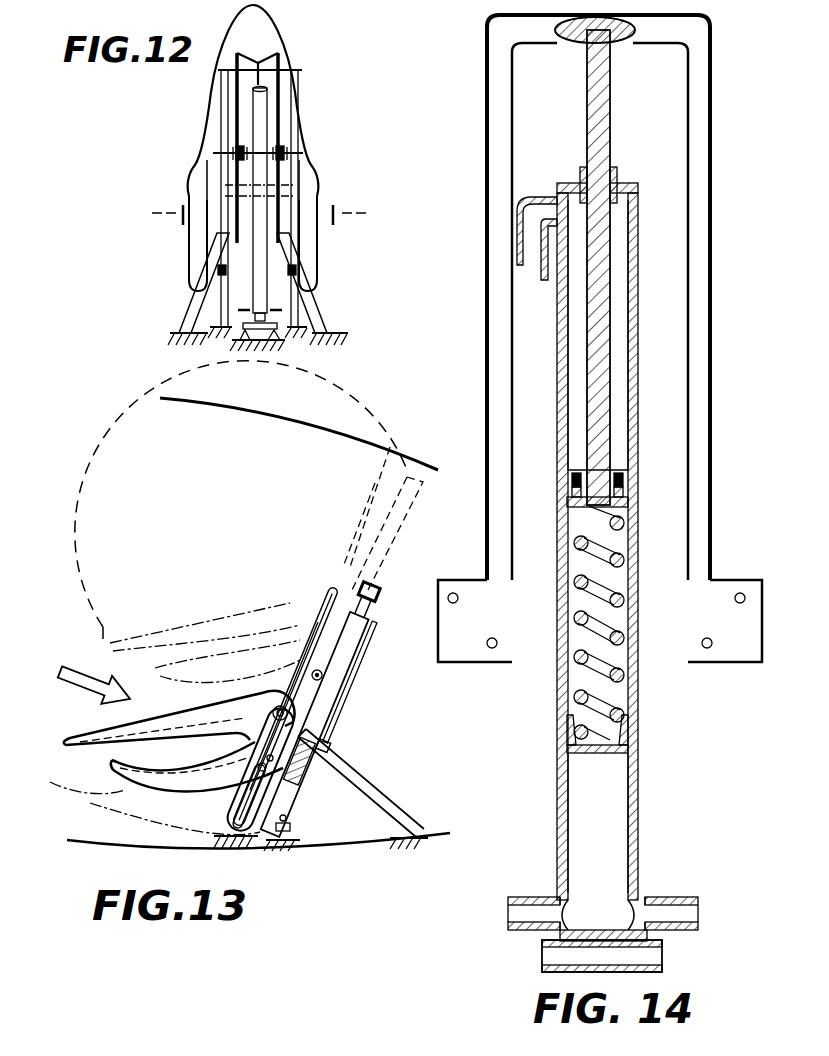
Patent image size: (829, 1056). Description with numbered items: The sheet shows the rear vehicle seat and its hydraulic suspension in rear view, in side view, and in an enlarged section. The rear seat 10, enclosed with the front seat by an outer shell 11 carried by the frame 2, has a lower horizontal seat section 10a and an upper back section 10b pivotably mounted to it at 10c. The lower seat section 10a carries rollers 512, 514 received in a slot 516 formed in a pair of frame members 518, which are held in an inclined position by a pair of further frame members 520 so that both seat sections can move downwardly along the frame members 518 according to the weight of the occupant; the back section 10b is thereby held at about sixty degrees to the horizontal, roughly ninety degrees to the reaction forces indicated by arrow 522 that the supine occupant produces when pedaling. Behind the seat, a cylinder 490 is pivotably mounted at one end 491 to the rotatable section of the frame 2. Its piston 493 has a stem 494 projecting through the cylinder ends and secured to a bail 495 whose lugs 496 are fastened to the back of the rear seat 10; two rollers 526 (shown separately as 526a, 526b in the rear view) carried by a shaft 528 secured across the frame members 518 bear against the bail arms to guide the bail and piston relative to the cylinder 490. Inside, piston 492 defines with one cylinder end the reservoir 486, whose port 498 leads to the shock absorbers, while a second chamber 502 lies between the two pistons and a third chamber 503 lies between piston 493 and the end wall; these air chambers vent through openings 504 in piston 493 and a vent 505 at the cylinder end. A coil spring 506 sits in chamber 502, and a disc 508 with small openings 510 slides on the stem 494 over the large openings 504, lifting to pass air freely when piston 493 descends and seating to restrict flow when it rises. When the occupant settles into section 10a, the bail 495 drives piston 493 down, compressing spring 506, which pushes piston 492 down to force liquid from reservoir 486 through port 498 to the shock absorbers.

In FIG. 13, the frame 2 is at (450, 830).
In FIG. 12, the rear seat 10 is at (330, 170).
In FIG. 12, the lower horizontal seat section 10a is at (195, 255).
In FIG. 13, the lower horizontal seat section 10a is at (87, 797).
In FIG. 12, the upper back section 10b is at (213, 97).
In FIG. 13, the upper back section 10b is at (107, 733).
In FIG. 12, the pivot 10c is at (180, 212).
In FIG. 13, the outer shell 11 is at (350, 443).
In FIG. 14, the reservoir 486 is at (618, 807).
In FIG. 12, the cylinder 490 is at (260, 118).
In FIG. 13, the cylinder 490 is at (312, 710).
In FIG. 14, the cylinder 490 is at (557, 705).
In FIG. 12, the end 491 is at (227, 337).
In FIG. 13, the end 491 is at (283, 830).
In FIG. 14, the end 491 is at (547, 957).
In FIG. 14, the piston 492 is at (582, 752).
In FIG. 14, the piston 493 is at (630, 507).
In FIG. 14, the stem 494 is at (597, 420).
In FIG. 12, the bail 495 is at (283, 60).
In FIG. 13, the bail 495 is at (377, 600).
In FIG. 14, the bail 495 is at (520, 33).
In FIG. 14, the lugs 496 is at (462, 647).
In FIG. 14, the port 498 is at (675, 912).
In FIG. 14, the second chamber 502 is at (622, 700).
In FIG. 14, the third chamber 503 is at (618, 377).
In FIG. 14, the openings 504 is at (582, 497).
In FIG. 14, the vent 505 is at (533, 270).
In FIG. 14, the coil spring 506 is at (623, 560).
In FIG. 14, the disc 508 is at (627, 480).
In FIG. 14, the openings 510 is at (583, 472).
In FIG. 12, the roller 512 is at (293, 283).
In FIG. 13, the roller 512 is at (263, 773).
In FIG. 12, the roller 514 is at (317, 233).
In FIG. 13, the roller 514 is at (307, 715).
In FIG. 13, the slot 516 is at (315, 620).
In FIG. 12, the frame members 518 is at (290, 128).
In FIG. 13, the frame members 518 is at (317, 600).
In FIG. 12, the frame members 520 is at (197, 298).
In FIG. 13, the frame members 520 is at (347, 782).
In FIG. 13, the arrow 522 is at (80, 677).
In FIG. 13, the rollers 526 is at (320, 676).
In FIG. 12, the roller 526a is at (233, 150).
In FIG. 12, the roller 526b is at (280, 152).
In FIG. 12, the shaft 528 is at (208, 167).